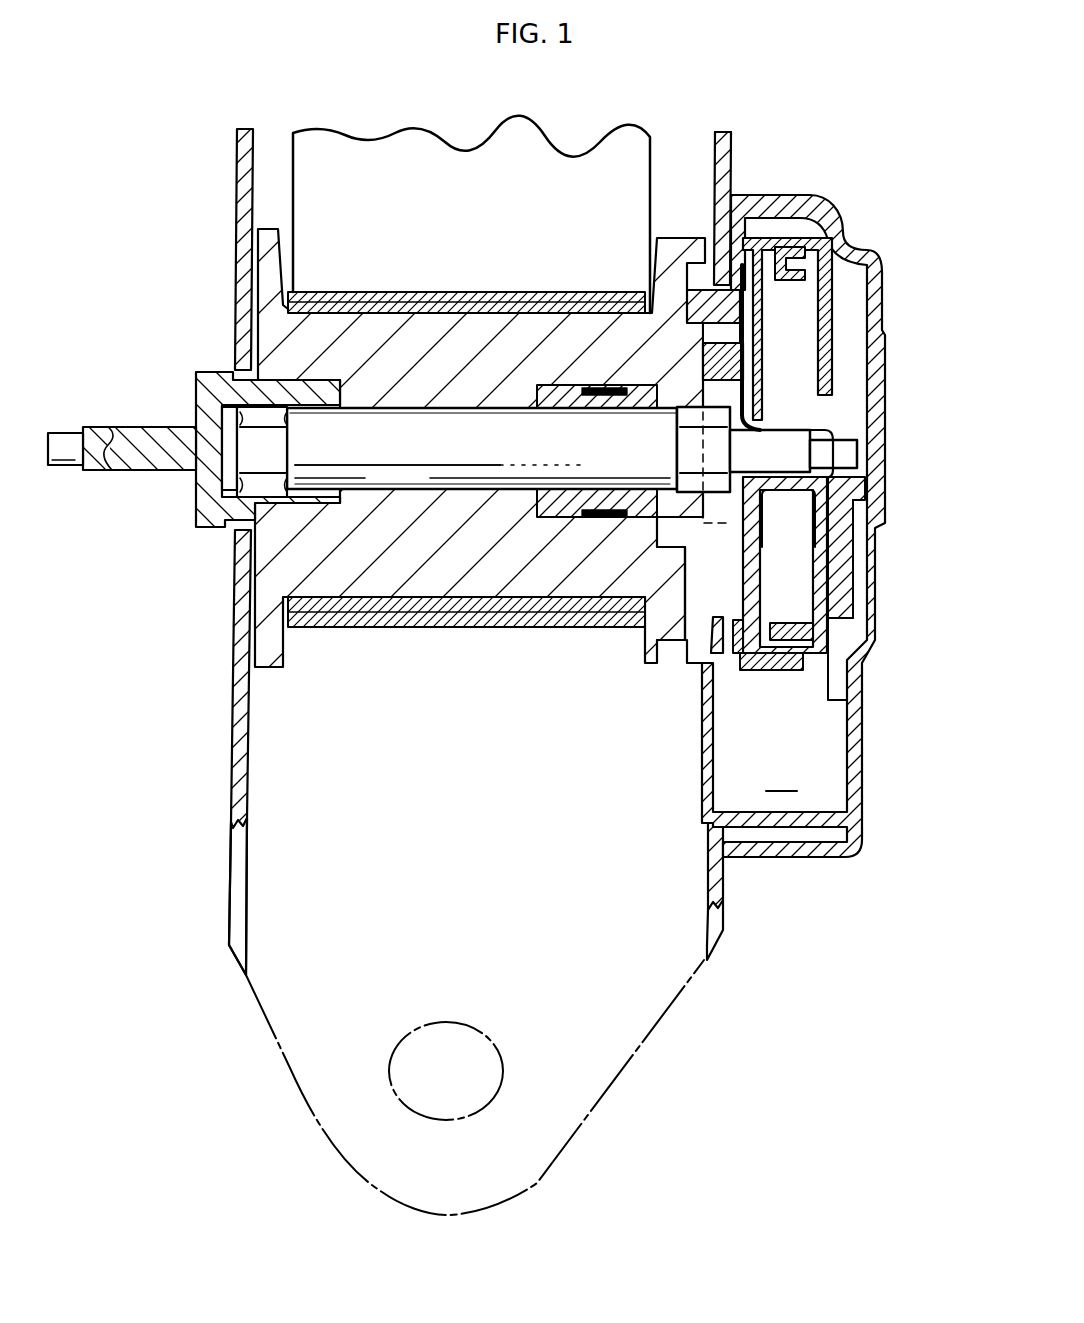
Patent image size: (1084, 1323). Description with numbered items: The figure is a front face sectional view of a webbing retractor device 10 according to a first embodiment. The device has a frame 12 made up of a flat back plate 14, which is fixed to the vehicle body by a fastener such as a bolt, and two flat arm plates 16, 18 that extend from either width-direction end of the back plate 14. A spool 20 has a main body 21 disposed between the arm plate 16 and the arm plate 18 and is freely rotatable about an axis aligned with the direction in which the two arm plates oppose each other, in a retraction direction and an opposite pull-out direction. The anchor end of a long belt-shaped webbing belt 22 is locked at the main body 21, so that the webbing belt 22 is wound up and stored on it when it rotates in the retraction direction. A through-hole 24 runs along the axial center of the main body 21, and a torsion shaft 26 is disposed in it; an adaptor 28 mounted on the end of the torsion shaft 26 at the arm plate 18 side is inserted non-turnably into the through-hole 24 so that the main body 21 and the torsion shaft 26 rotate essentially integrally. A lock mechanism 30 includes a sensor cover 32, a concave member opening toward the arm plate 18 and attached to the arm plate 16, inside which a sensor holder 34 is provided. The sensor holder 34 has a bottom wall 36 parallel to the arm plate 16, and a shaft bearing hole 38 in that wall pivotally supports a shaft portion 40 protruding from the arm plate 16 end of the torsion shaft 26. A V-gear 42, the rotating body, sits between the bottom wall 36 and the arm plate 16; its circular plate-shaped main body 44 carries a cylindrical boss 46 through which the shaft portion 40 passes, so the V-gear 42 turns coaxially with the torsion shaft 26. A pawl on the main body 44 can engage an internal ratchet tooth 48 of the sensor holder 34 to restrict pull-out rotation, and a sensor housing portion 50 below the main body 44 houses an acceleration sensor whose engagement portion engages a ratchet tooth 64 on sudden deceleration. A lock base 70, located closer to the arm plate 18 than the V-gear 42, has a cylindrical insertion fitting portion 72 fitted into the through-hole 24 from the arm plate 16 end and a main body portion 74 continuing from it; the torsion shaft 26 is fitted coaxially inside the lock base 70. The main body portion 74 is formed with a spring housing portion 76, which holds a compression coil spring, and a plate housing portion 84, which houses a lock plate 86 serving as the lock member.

The webbing retractor device 10 is at (721, 97).
The frame 12 is at (240, 978).
The back plate 14 is at (633, 1030).
The arm plate 16 is at (709, 873).
The arm plate 18 is at (247, 922).
The spool 20 is at (473, 580).
The main body 21 is at (410, 583).
The webbing belt 22 is at (566, 140).
The through-hole 24 is at (400, 480).
The torsion shaft 26 is at (450, 423).
The adaptor 28 is at (210, 522).
The lock mechanism 30 is at (803, 484).
The sensor cover 32 is at (882, 270).
The sensor holder 34 is at (837, 622).
The bottom wall 36 is at (832, 583).
The shaft bearing hole 38 is at (830, 457).
The shaft portion 40 is at (830, 433).
The V-gear 42 is at (767, 346).
The main body 44 is at (760, 553).
The boss 46 is at (790, 492).
The ratchet tooth 48 is at (790, 622).
The sensor housing portion 50 is at (784, 775).
The ratchet tooth 64 is at (777, 670).
The lock base 70 is at (645, 525).
The insertion fitting portion 72 is at (553, 508).
The main body portion 74 is at (688, 327).
The spring housing portion 76 is at (685, 643).
The plate housing portion 84 is at (740, 330).
The lock plate 86 is at (728, 365).